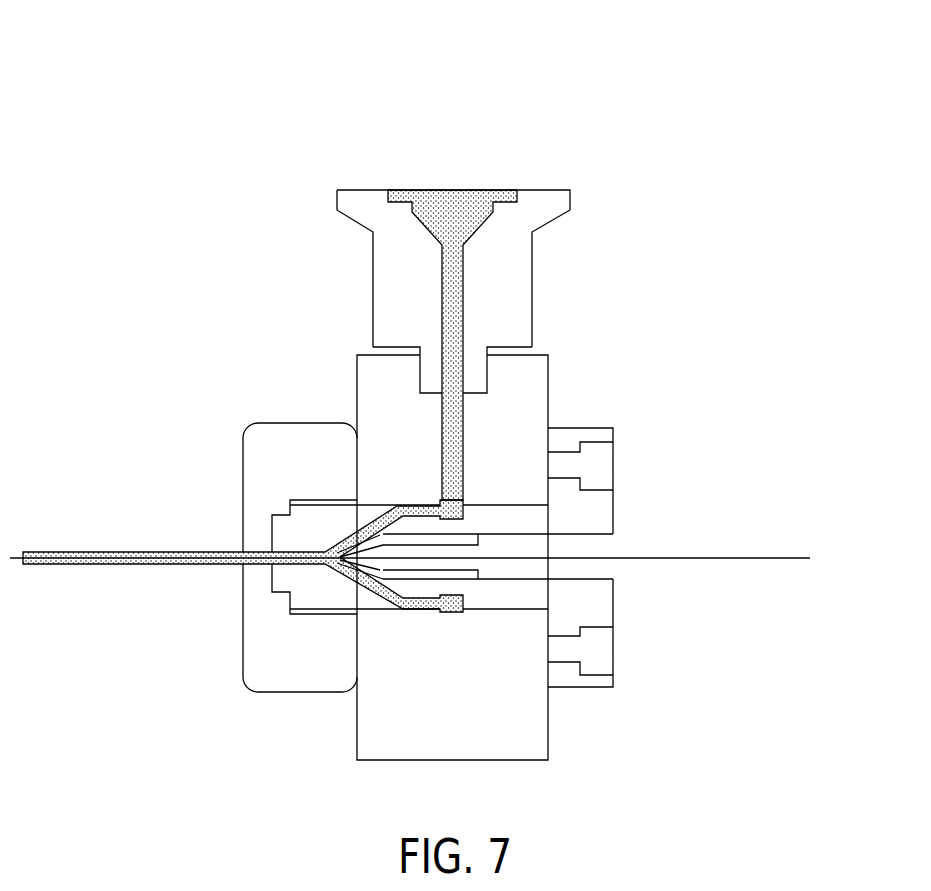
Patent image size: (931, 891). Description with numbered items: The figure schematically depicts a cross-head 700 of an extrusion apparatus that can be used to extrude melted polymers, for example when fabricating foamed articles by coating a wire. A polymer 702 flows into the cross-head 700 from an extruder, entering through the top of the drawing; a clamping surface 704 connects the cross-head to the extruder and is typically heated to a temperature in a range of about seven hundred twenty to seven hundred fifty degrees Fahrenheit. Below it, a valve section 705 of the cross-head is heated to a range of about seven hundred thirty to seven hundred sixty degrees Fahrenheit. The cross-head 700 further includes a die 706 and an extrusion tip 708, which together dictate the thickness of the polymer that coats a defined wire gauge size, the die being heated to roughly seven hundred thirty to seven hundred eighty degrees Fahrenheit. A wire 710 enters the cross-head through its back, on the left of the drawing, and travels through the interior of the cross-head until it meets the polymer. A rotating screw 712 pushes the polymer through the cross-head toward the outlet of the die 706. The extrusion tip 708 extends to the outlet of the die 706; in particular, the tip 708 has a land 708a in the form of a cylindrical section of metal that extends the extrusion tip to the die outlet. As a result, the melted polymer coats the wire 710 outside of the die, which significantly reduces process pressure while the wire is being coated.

The cross-head 700 is at (156, 84).
The polymer 702 is at (452, 200).
The clamping surface 704 is at (545, 213).
The valve section 705 is at (518, 275).
The die 706 is at (543, 735).
The extrusion tip 708 is at (350, 578).
The land 708a is at (287, 547).
The wire 710 is at (707, 558).
The rotating screw 712 is at (417, 577).